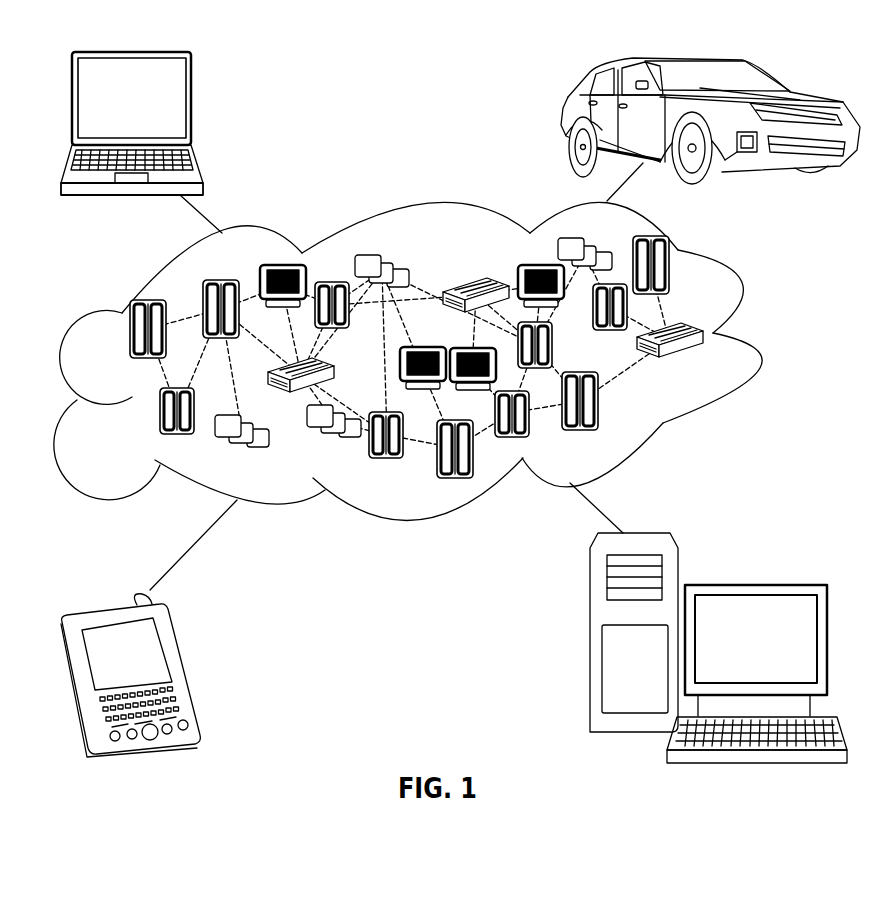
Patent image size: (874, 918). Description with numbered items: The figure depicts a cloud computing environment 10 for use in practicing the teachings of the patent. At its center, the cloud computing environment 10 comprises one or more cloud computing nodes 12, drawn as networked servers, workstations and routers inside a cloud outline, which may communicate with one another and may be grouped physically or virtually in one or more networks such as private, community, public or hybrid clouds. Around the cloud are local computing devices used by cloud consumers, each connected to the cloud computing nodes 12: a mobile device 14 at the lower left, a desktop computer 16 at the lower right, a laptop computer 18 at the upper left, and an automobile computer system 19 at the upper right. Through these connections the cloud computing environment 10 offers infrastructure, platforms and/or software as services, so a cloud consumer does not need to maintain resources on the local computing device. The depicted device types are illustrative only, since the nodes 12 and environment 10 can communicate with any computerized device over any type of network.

The cloud computing environment 10 is at (438, 84).
The cloud computing nodes 12 is at (712, 370).
The mobile device 14 is at (182, 667).
The desktop computer 16 is at (755, 584).
The laptop computer 18 is at (192, 107).
The automobile computer system 19 is at (567, 118).